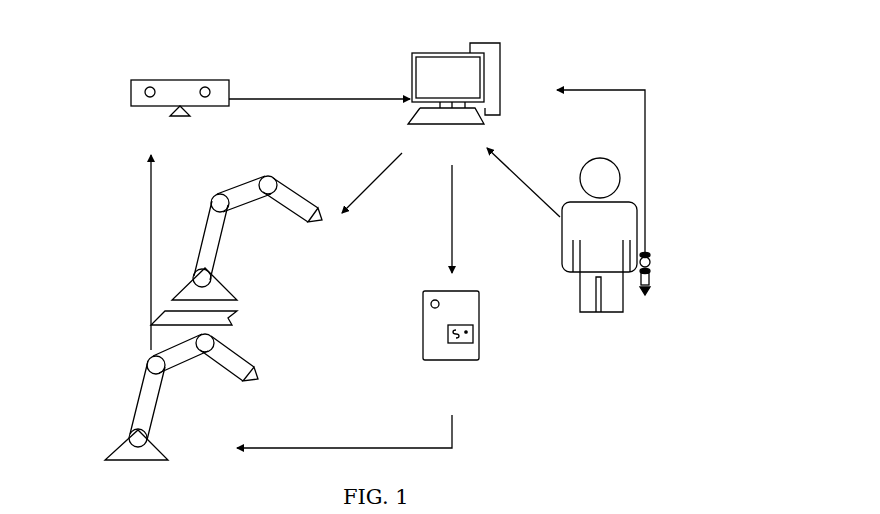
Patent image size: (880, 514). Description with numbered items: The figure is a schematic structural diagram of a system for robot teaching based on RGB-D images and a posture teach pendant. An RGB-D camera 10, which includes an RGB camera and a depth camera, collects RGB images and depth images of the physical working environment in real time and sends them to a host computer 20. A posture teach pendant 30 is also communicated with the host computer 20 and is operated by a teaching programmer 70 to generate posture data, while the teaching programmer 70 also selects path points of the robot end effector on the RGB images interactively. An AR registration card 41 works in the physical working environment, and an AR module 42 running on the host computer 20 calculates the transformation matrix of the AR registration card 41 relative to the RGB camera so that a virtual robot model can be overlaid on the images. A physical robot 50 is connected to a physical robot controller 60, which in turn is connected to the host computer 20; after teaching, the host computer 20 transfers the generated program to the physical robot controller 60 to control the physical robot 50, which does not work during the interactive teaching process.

The RGB-D camera 10 is at (178, 78).
The host computer 20 is at (430, 52).
The posture teach pendant 30 is at (650, 268).
The AR registration card 41 is at (230, 318).
The AR module 42 is at (208, 222).
The physical robot 50 is at (133, 413).
The physical robot controller 60 is at (480, 355).
The teaching programmer 70 is at (588, 280).